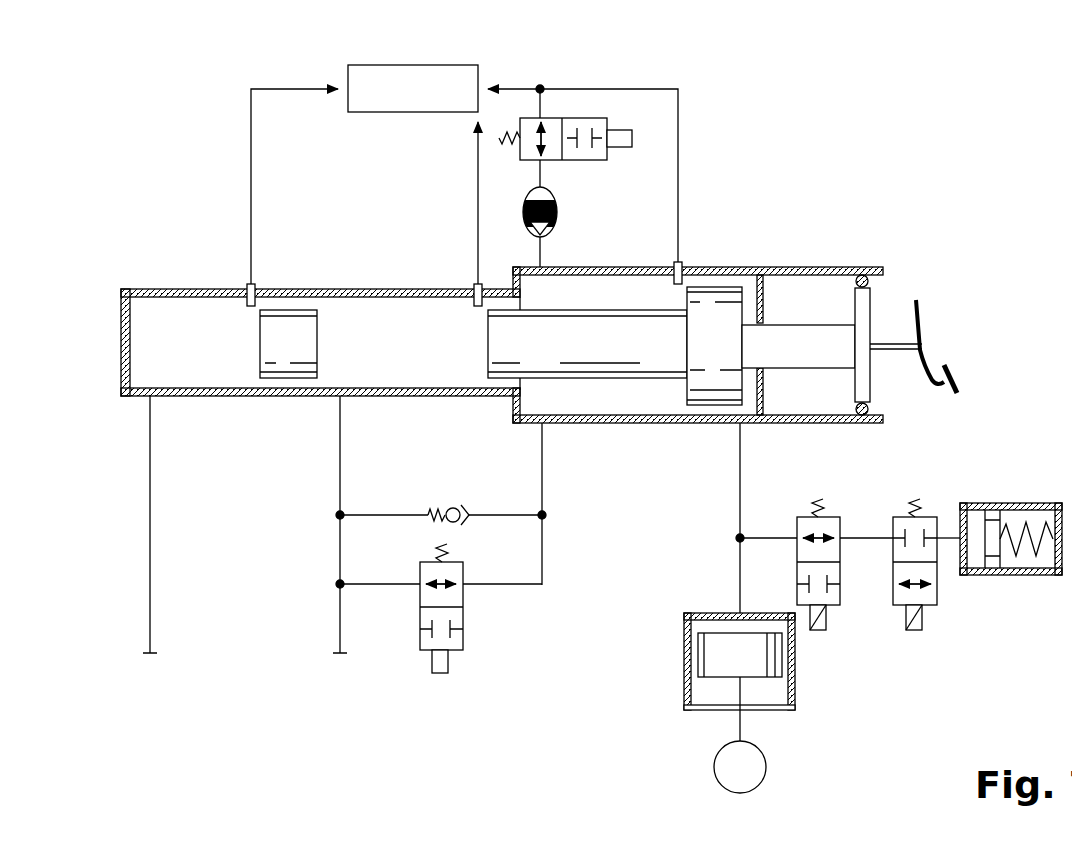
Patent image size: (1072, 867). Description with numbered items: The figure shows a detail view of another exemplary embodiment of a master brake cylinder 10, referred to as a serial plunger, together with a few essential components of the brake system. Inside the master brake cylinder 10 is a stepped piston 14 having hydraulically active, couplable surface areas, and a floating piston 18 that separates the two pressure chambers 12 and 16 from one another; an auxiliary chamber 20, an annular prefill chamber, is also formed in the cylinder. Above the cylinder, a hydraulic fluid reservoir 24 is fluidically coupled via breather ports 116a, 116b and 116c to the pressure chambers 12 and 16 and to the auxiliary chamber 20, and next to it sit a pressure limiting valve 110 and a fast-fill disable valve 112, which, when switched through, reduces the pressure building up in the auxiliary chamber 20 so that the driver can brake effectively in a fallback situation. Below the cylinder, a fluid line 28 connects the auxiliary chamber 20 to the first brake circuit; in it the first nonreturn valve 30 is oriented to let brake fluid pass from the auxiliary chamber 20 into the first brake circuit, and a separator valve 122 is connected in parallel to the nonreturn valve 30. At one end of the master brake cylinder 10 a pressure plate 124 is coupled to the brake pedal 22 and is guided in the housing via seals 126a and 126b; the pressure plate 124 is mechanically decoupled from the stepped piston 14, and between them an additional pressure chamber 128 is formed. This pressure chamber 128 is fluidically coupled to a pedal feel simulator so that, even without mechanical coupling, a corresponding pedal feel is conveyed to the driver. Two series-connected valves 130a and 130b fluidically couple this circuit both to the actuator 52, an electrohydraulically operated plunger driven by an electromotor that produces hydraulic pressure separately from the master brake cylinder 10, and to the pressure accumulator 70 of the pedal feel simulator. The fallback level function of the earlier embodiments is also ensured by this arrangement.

The master brake cylinder 10 is at (160, 289).
The pressure chamber 12 is at (380, 302).
The stepped piston 14 is at (708, 390).
The pressure chamber 16 is at (134, 350).
The floating piston 18 is at (298, 310).
The auxiliary chamber 20 is at (656, 297).
The brake pedal 22 is at (936, 350).
The hydraulic fluid reservoir 24 is at (412, 64).
The fluid line 28 is at (544, 478).
The first nonreturn valve 30 is at (456, 508).
The actuator 52 is at (650, 720).
The pressure accumulator 70 is at (1020, 503).
The pressure limiting valve 110 is at (558, 212).
The fast-fill disable valve 112 is at (596, 118).
The breather port 116a is at (247, 285).
The breather port 116b is at (474, 285).
The breather port 116c is at (682, 264).
The separator valve 122 is at (465, 632).
The pressure plate 124 is at (872, 302).
The seal 126a is at (862, 275).
The seal 126b is at (862, 416).
The additional pressure chamber 128 is at (798, 275).
The valve 130a is at (830, 630).
The valve 130b is at (926, 630).